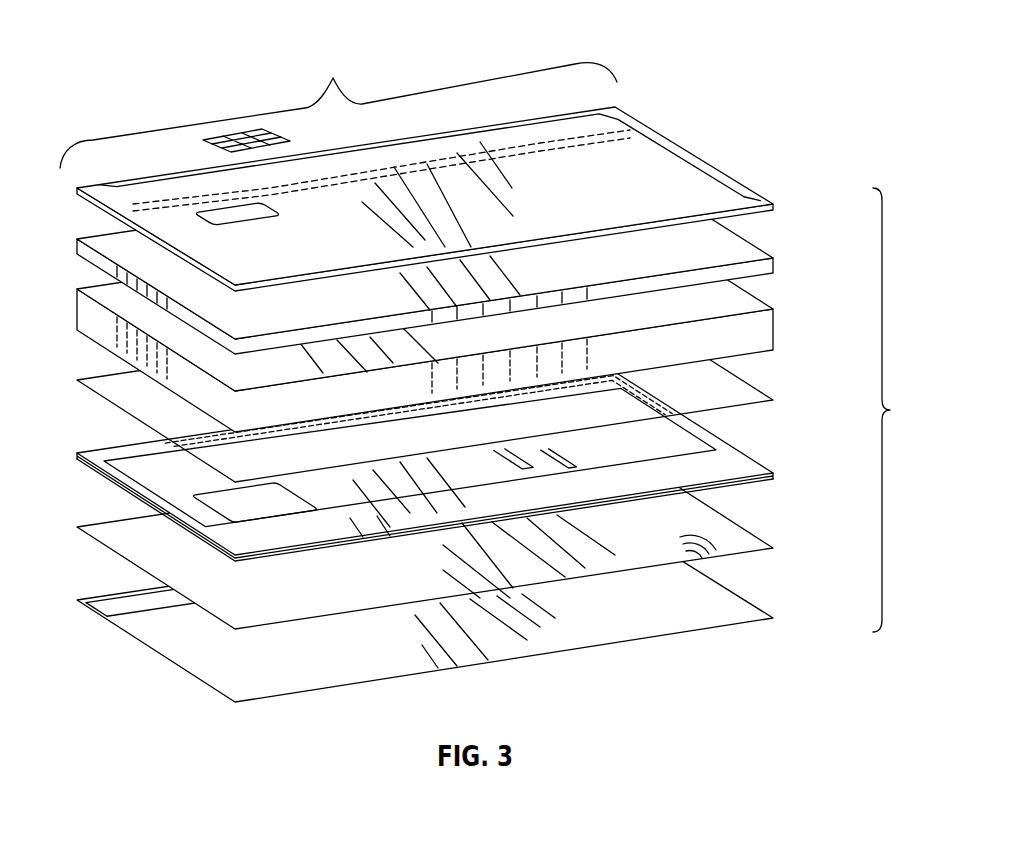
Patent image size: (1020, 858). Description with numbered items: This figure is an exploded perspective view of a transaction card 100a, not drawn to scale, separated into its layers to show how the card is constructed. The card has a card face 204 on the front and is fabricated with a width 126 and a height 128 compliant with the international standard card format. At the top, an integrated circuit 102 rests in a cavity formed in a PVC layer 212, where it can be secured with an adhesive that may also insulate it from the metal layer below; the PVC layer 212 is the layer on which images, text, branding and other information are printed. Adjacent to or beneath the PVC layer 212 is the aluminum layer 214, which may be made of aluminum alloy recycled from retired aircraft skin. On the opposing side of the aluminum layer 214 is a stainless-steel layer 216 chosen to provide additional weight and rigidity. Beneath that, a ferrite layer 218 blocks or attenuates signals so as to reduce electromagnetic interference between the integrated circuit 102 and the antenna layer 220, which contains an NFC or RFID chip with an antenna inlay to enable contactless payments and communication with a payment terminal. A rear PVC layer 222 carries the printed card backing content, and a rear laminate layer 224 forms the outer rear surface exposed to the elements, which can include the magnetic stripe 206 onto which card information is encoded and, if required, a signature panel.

The transaction card 100a is at (131, 109).
The integrated circuit 102 is at (207, 136).
The width 126 is at (338, 103).
The height 128 is at (904, 410).
The card face 204 is at (396, 220).
The magnetic stripe 206 is at (530, 152).
The PVC layer 212 is at (177, 219).
The aluminum layer 214 is at (730, 247).
The stainless-steel layer 216 is at (750, 342).
The ferrite layer 218 is at (743, 397).
The antenna layer 220 is at (730, 465).
The rear PVC layer 222 is at (730, 535).
The rear laminate layer 224 is at (738, 613).